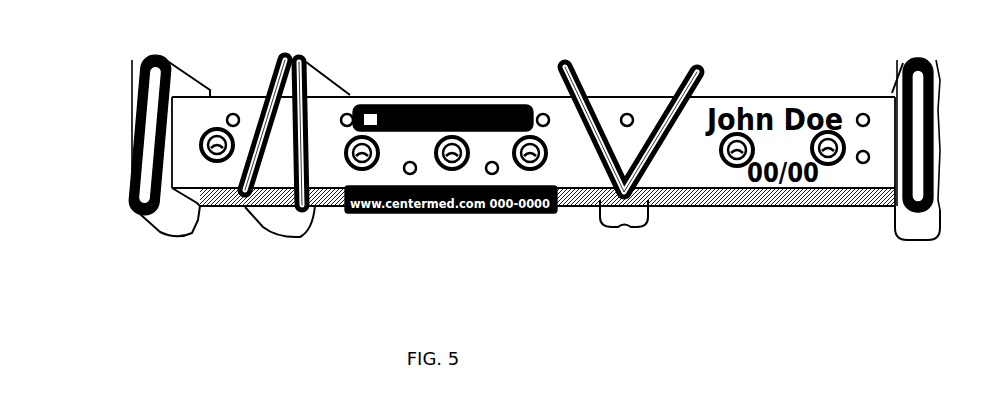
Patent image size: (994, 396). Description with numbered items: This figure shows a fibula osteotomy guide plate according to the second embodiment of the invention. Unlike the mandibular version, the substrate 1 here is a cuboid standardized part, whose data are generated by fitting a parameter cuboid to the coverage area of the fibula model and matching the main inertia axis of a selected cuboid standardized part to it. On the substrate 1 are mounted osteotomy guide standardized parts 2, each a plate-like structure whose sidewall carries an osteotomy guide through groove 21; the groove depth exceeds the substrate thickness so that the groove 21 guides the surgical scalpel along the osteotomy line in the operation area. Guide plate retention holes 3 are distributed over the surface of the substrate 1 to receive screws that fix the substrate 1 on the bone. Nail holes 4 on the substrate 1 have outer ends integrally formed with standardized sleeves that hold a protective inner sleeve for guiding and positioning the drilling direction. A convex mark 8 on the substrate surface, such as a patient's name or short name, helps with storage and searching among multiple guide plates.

The substrate 1 is at (693, 175).
The osteotomy guide standardized part 2 is at (183, 213).
The osteotomy guide through groove 21 is at (133, 153).
The guide plate retention hole 3 is at (862, 110).
The nail hole 4 is at (833, 163).
The convex mark 8 is at (427, 110).